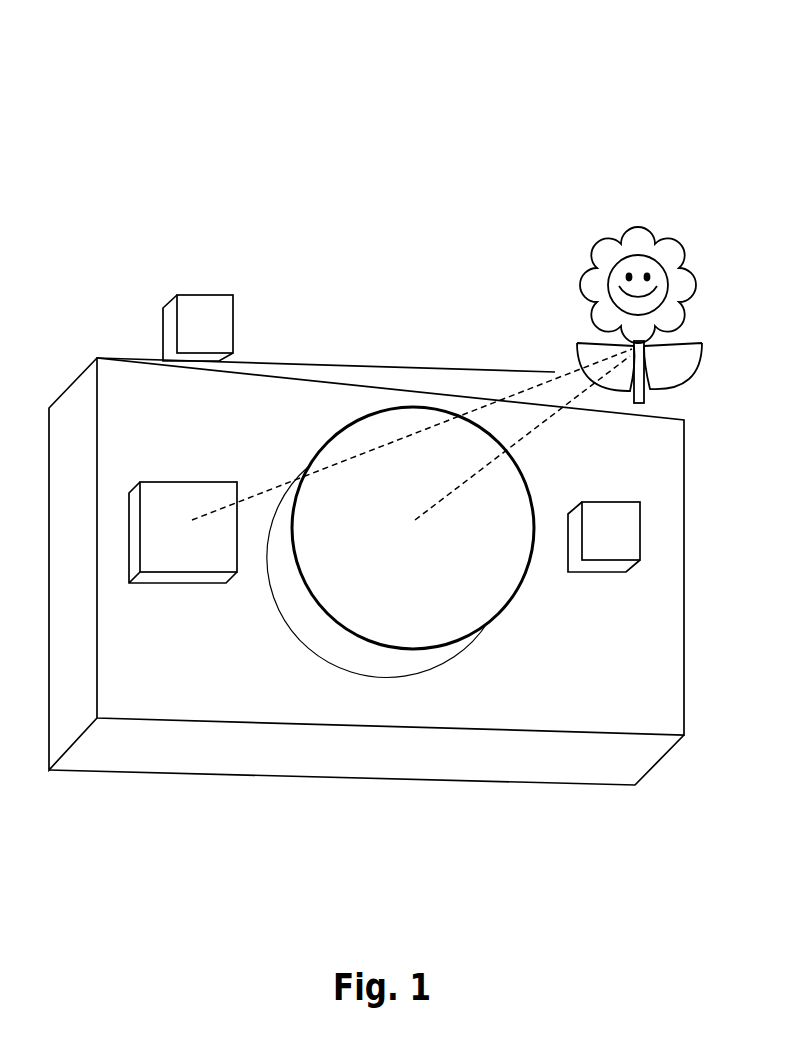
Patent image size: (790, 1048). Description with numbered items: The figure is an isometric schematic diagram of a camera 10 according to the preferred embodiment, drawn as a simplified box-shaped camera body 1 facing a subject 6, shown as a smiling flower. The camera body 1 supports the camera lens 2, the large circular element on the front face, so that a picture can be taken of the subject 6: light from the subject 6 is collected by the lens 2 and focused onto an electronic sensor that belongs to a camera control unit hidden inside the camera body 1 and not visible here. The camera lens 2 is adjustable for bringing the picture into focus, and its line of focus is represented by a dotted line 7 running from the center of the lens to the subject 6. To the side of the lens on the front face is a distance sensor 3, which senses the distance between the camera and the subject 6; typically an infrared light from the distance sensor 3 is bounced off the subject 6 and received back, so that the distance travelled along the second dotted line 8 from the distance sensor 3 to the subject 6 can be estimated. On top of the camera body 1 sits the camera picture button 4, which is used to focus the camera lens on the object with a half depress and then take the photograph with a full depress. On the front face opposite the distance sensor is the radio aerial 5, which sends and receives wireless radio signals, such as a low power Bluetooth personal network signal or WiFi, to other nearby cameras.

The camera 10 is at (218, 118).
The camera body 1 is at (377, 355).
The camera lens 2 is at (405, 628).
The distance sensor 3 is at (177, 560).
The camera picture button 4 is at (185, 315).
The radio aerial 5 is at (608, 562).
The subject 6 is at (605, 242).
The dotted line 7 is at (533, 432).
The dotted line 8 is at (482, 398).